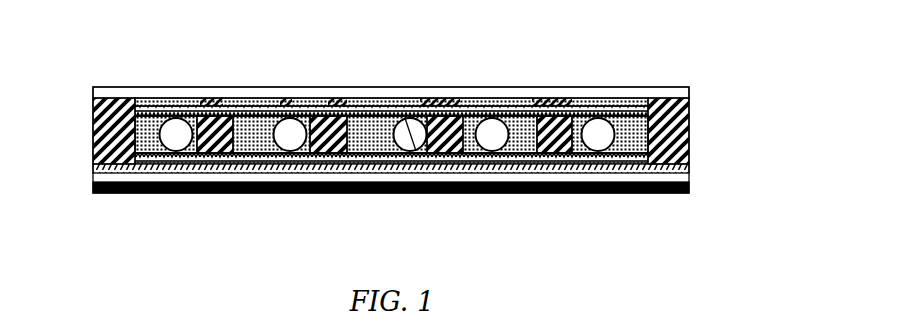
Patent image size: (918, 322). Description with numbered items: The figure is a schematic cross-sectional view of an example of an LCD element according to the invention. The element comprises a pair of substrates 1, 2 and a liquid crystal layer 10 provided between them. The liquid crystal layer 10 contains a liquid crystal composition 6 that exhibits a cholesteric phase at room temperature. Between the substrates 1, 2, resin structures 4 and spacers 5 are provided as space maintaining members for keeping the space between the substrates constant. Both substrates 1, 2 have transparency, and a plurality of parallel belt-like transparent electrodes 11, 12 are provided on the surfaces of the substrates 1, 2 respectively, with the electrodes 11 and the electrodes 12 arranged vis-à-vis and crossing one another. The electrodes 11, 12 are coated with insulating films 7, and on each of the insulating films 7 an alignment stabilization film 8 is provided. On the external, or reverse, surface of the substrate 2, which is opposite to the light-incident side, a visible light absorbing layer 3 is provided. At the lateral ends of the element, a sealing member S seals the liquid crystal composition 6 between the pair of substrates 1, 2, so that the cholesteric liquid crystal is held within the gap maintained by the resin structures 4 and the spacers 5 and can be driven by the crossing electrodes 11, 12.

The substrate 1 is at (162, 92).
The substrate 2 is at (165, 175).
The visible light absorbing layer 3 is at (210, 192).
The resin structure 4 is at (223, 99).
The spacer 5 is at (294, 142).
The liquid crystal composition 6 is at (268, 101).
The insulating film 7 is at (470, 160).
The alignment stabilization film 8 is at (562, 108).
The liquid crystal layer 10 is at (689, 137).
The transparent electrode 11 is at (372, 100).
The transparent electrode 12 is at (417, 170).
The sealing member S is at (666, 100).